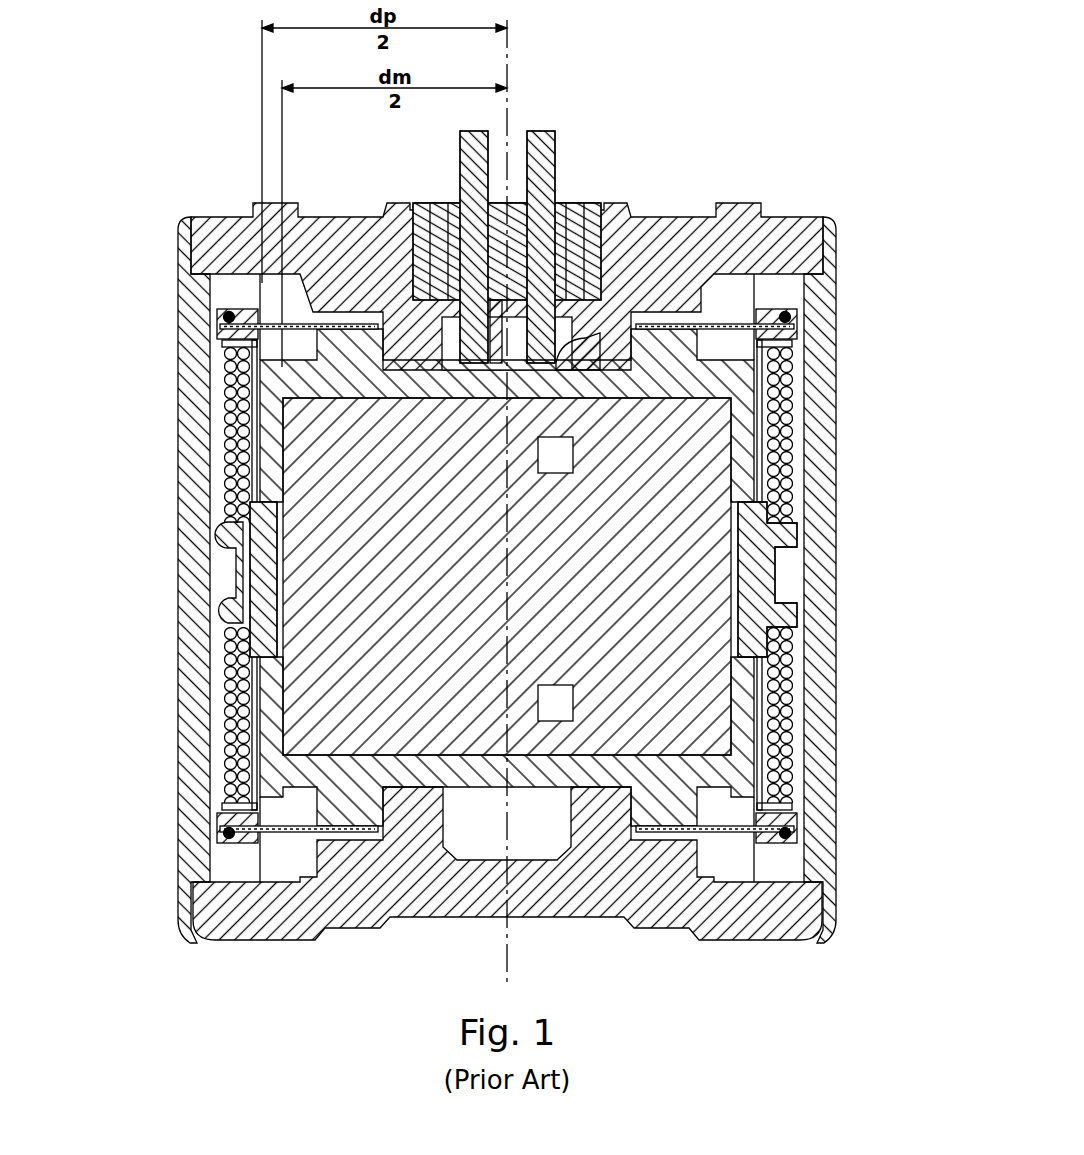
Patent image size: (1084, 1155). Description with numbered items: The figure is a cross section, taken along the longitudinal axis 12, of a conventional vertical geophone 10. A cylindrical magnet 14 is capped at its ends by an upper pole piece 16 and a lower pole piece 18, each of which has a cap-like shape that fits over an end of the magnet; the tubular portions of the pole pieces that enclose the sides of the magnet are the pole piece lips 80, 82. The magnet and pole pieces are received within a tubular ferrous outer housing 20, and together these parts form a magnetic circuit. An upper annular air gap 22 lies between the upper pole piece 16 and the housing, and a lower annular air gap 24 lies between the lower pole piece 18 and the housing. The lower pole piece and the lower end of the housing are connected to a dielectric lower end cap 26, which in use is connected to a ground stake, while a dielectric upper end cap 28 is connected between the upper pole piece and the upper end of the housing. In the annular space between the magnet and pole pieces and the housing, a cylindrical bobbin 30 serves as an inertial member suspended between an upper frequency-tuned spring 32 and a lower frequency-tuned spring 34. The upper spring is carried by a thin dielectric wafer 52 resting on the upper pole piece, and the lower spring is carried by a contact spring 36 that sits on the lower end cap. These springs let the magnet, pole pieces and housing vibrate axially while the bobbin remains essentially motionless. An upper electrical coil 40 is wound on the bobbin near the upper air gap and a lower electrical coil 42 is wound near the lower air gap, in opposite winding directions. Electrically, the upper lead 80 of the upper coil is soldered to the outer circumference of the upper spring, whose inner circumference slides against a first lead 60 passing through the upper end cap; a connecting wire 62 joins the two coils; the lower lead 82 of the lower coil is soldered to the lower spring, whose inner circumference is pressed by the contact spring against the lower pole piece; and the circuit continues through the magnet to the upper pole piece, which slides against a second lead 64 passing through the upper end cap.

The vertical geophone 10 is at (175, 127).
The longitudinal axis 12 is at (512, 969).
The cylindrical magnet 14 is at (283, 492).
The upper pole piece 16 is at (292, 358).
The lower pole piece 18 is at (270, 810).
The outer housing 20 is at (178, 625).
The upper annular air gap 22 is at (217, 409).
The lower annular air gap 24 is at (218, 735).
The lower end cap 26 is at (263, 942).
The upper end cap 28 is at (725, 217).
The bobbin 30 is at (775, 578).
The upper frequency-tuned spring 32 is at (785, 315).
The lower frequency-tuned spring 34 is at (762, 830).
The contact spring 36 is at (673, 838).
The upper electrical coil 40 is at (792, 425).
The lower electrical coil 42 is at (795, 745).
The thin dielectric wafer 52 is at (355, 330).
The first lead 60 is at (345, 330).
The connecting wire 62 is at (228, 556).
The second lead 64 is at (543, 130).
The pole piece lip / upper lead of upper coil 80 is at (226, 317).
The pole piece lip / lower lead of lower coil 82 is at (247, 835).